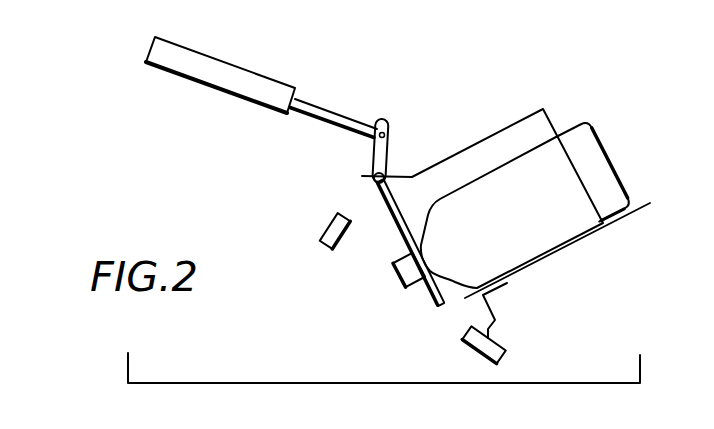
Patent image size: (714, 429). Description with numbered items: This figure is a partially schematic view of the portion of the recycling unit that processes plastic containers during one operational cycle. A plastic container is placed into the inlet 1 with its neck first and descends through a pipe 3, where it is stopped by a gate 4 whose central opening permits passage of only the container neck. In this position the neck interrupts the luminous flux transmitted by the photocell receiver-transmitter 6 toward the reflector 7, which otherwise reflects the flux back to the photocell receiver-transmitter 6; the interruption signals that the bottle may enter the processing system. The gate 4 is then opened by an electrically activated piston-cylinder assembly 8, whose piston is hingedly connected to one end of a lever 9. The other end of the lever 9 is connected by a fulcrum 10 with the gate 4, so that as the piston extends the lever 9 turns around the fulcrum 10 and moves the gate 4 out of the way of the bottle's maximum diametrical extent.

The inlet 1 is at (557, 138).
The pipe 3 is at (480, 140).
The gate 4 is at (397, 213).
The photocell receiver-transmitter 6 is at (500, 343).
The reflector 7 is at (325, 231).
The piston-cylinder assembly 8 is at (248, 85).
The lever 9 is at (372, 153).
The fulcrum 10 is at (378, 184).